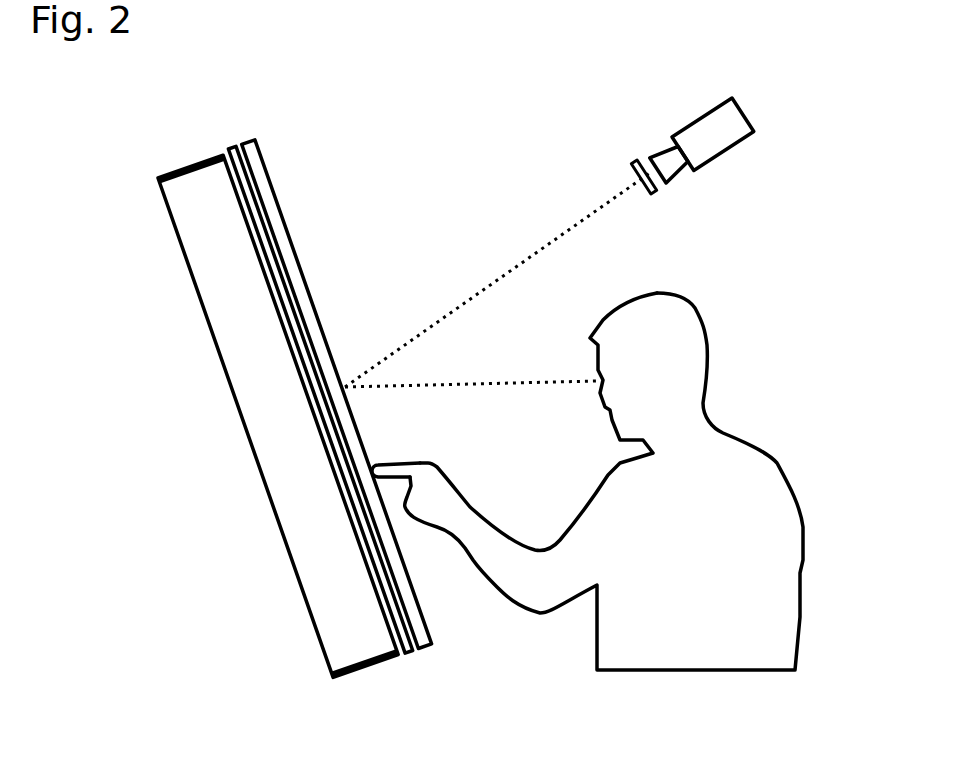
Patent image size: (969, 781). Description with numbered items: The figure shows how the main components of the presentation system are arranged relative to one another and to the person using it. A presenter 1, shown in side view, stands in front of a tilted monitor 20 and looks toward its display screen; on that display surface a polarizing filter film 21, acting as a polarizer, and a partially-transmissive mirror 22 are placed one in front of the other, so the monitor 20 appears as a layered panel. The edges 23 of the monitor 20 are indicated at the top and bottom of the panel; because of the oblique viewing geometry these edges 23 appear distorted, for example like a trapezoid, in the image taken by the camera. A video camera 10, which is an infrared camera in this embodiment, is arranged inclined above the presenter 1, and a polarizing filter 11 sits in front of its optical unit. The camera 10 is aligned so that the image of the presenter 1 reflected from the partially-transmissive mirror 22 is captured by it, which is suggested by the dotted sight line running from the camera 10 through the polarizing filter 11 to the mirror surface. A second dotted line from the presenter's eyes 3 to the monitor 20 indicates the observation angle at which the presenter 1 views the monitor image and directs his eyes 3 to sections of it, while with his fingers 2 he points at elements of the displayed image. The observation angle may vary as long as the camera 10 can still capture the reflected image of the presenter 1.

The presenter 1 is at (763, 455).
The fingers 2 is at (402, 461).
The eyes 3 is at (597, 381).
The video camera 10 is at (702, 115).
The polarizing filter 11 is at (632, 160).
The monitor 20 is at (180, 250).
The polarizing filter film 21 is at (232, 148).
The partially-transmissive mirror 22 is at (253, 143).
The edges 23 is at (183, 167).